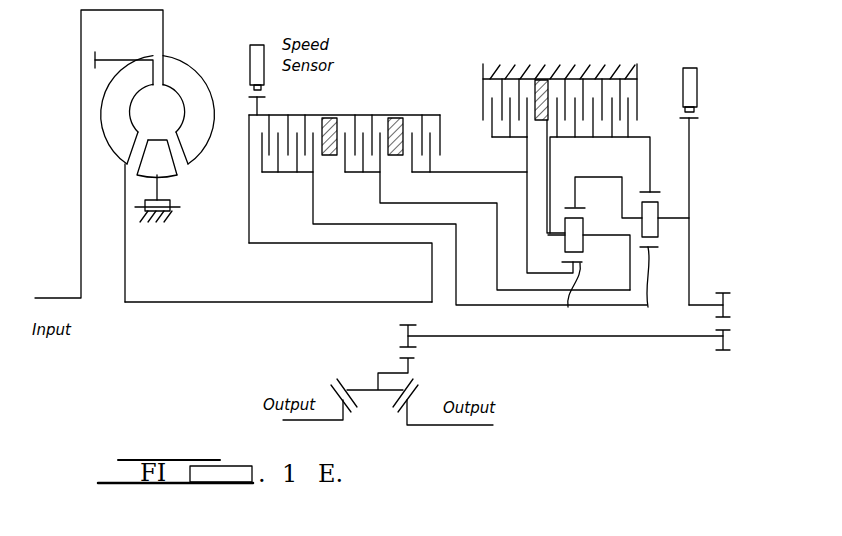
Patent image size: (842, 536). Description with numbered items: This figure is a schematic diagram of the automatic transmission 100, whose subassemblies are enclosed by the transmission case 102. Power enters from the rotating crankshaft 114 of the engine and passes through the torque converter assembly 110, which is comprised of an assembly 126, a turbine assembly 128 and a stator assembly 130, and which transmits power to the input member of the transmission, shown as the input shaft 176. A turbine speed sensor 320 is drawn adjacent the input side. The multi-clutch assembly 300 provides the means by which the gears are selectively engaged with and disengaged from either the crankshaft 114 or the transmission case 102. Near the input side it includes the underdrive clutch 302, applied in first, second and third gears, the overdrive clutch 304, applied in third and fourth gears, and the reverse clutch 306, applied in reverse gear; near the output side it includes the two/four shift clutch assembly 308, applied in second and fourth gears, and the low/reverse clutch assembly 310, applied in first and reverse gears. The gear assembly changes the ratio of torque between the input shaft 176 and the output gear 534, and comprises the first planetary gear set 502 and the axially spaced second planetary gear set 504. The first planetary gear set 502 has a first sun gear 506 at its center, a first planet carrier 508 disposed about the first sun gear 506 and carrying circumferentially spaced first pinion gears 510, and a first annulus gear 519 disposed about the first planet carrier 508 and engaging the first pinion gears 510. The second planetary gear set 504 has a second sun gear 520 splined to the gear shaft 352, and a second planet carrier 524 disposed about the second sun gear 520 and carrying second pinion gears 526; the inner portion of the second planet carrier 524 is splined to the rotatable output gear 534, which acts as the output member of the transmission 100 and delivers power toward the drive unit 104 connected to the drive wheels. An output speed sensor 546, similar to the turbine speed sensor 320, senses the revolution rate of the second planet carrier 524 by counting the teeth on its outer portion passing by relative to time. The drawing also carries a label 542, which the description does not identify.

The automatic transmission 100 is at (395, 47).
The transmission case 102 is at (515, 70).
The drive unit 104 is at (560, 339).
The torque converter assembly 110 is at (188, 56).
The crankshaft 114 is at (50, 298).
The assembly 126 is at (211, 90).
The turbine assembly 128 is at (111, 162).
The stator assembly 130 is at (171, 179).
The input shaft 176 is at (258, 303).
The multi-clutch assembly 300 is at (382, 111).
The underdrive clutch 302 is at (282, 115).
The overdrive clutch 304 is at (355, 113).
The reverse clutch 306 is at (435, 113).
The two/four shift clutch assembly 308 is at (490, 124).
The low/reverse clutch assembly 310 is at (641, 97).
The turbine speed sensor 320 is at (262, 45).
The gear shaft 352 is at (494, 305).
The first planetary gear set 502 is at (586, 244).
The second planetary gear set 504 is at (664, 204).
The first sun gear 506 is at (562, 234).
The first planet carrier 508 is at (630, 276).
The first pinion gears 510 is at (571, 238).
The first annulus gear 519 is at (578, 209).
The second sun gear 520 is at (653, 249).
The second planet carrier 524 is at (693, 258).
The second pinion gears 526 is at (652, 228).
The output gear 534 is at (733, 281).
The brake 542 is at (655, 192).
The output speed sensor 546 is at (697, 77).